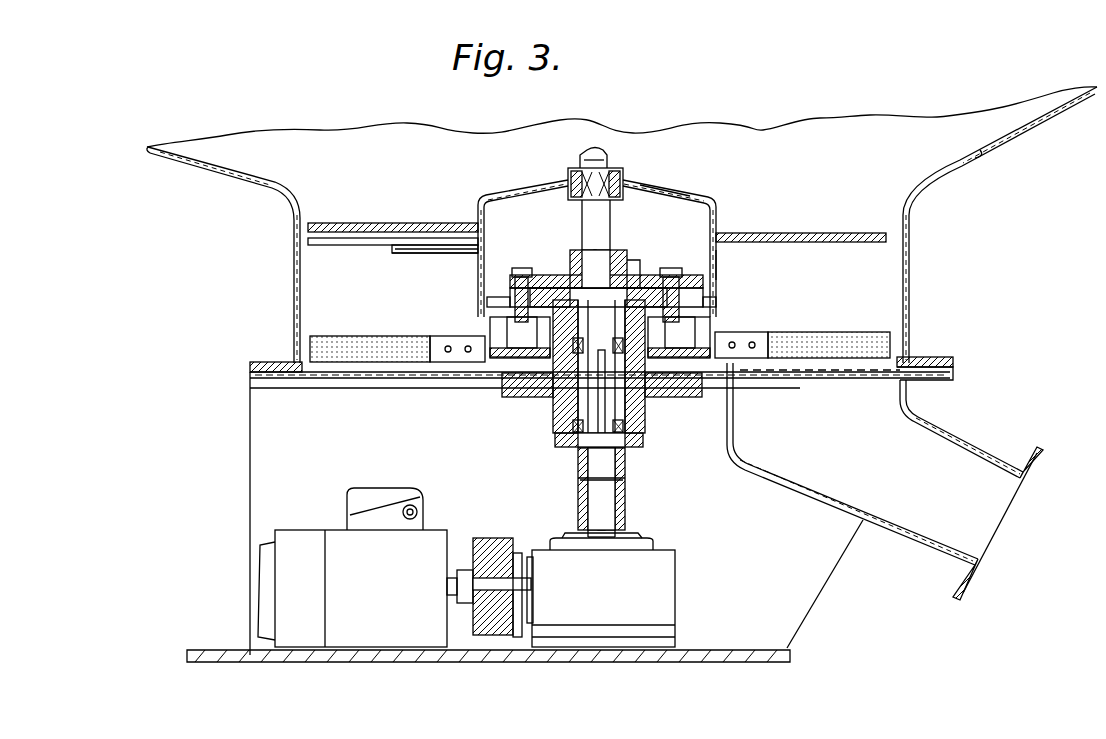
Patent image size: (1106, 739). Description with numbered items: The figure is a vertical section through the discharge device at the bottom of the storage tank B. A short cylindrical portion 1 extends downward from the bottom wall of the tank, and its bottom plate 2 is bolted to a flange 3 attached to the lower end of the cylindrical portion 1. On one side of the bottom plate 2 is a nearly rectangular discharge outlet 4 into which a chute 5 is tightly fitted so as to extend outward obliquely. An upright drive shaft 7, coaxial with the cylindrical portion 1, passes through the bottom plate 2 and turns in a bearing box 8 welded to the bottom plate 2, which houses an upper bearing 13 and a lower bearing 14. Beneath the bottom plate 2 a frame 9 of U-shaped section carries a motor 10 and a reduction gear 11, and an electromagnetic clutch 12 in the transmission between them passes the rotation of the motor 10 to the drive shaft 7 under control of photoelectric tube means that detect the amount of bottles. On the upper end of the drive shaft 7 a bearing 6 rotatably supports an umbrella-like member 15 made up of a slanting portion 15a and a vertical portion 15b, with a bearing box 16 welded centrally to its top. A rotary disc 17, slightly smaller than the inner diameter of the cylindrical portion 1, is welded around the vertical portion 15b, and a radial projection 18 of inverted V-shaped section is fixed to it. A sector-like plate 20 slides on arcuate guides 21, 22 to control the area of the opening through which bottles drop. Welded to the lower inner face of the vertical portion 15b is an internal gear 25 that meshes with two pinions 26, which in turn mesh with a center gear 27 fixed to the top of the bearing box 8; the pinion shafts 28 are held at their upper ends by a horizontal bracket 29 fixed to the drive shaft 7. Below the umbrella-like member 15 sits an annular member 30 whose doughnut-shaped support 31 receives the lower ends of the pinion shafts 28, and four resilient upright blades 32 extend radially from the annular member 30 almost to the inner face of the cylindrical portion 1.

The cylindrical portion 1 is at (905, 290).
The storage tank B is at (967, 165).
The bottom plate 2 is at (355, 385).
The flange 3 is at (260, 376).
The discharge outlet 4 is at (835, 370).
The chute 5 is at (987, 452).
The bearing 6 is at (566, 182).
The drive shaft 7 is at (607, 410).
The bearing box 8 is at (560, 423).
The housing 9 is at (256, 463).
The motor 10 is at (380, 590).
The reduction gear 11 is at (610, 590).
The electromagnetic clutch 12 is at (492, 540).
The upper bearing 13 is at (560, 398).
The lower bearing 14 is at (566, 447).
The umbrella-like member 15 is at (723, 200).
The slanting portion 15a is at (666, 192).
The vertical portion 15b is at (722, 265).
The bearing box 16 is at (614, 178).
The rotary disc 17 is at (848, 241).
The projection 18 is at (375, 226).
The sector-like plate 20 is at (416, 250).
The arcuate guide 21 is at (400, 253).
The arcuate guide 22 is at (453, 256).
The internal gear 25 is at (717, 302).
The pinion 26 is at (520, 285).
The center gear 27 is at (640, 280).
The pinion shaft 28 is at (700, 324).
The horizontal bracket 29 is at (550, 275).
The annular member 30 is at (485, 330).
The support 31 is at (660, 390).
The upright blade 32 is at (342, 342).